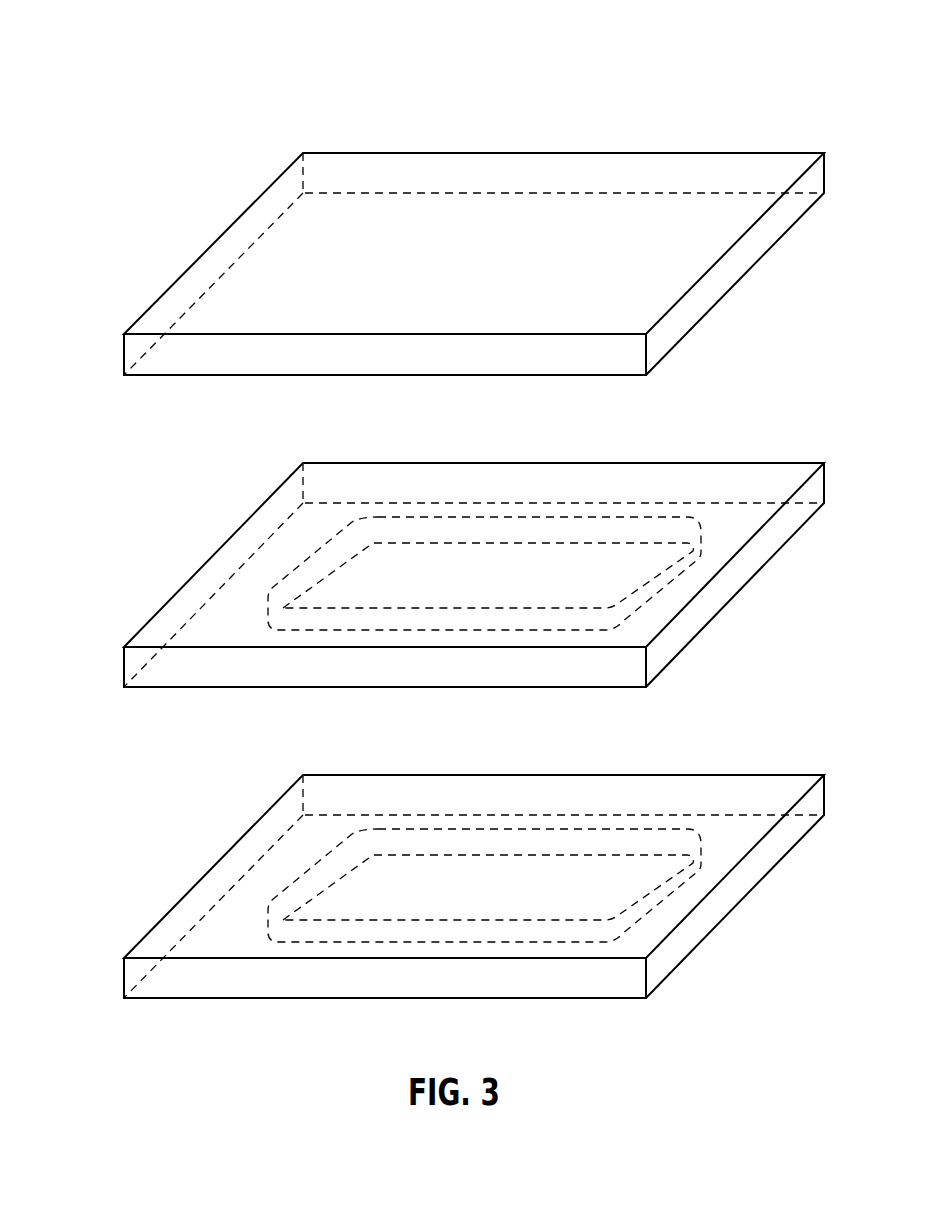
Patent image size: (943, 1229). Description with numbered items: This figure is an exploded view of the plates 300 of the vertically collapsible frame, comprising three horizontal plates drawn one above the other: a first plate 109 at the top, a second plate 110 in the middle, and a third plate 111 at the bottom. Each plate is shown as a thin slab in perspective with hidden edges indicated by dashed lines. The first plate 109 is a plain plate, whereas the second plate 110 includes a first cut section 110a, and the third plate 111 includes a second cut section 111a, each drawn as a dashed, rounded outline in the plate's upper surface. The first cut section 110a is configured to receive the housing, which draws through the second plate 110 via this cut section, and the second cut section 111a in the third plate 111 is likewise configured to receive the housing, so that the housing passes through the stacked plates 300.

The plates 300 is at (145, 56).
The first plate 109 is at (173, 363).
The second plate 110 is at (173, 672).
The first cut section 110a is at (633, 530).
The third plate 111 is at (173, 980).
The second cut section 111a is at (633, 842).